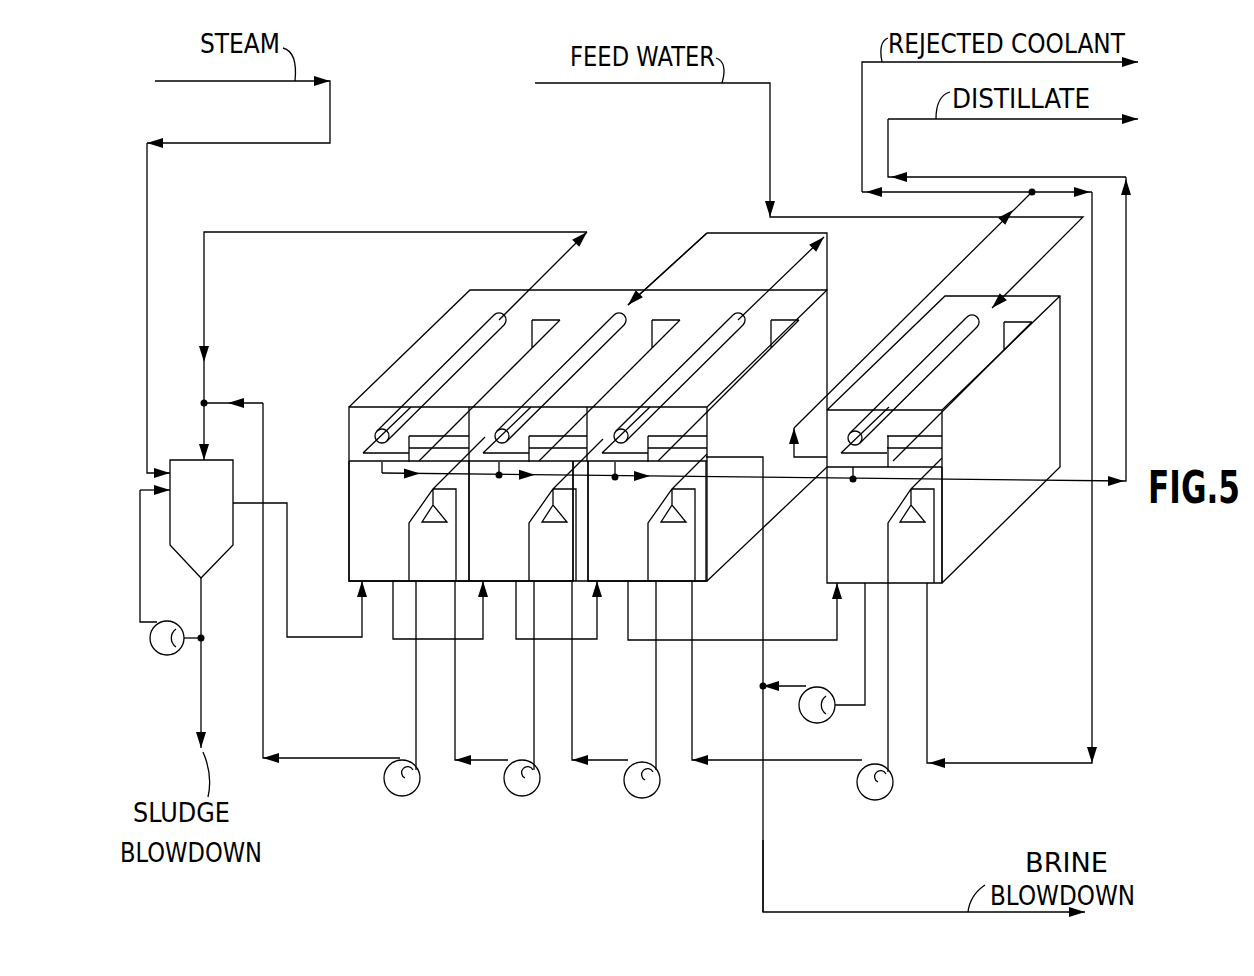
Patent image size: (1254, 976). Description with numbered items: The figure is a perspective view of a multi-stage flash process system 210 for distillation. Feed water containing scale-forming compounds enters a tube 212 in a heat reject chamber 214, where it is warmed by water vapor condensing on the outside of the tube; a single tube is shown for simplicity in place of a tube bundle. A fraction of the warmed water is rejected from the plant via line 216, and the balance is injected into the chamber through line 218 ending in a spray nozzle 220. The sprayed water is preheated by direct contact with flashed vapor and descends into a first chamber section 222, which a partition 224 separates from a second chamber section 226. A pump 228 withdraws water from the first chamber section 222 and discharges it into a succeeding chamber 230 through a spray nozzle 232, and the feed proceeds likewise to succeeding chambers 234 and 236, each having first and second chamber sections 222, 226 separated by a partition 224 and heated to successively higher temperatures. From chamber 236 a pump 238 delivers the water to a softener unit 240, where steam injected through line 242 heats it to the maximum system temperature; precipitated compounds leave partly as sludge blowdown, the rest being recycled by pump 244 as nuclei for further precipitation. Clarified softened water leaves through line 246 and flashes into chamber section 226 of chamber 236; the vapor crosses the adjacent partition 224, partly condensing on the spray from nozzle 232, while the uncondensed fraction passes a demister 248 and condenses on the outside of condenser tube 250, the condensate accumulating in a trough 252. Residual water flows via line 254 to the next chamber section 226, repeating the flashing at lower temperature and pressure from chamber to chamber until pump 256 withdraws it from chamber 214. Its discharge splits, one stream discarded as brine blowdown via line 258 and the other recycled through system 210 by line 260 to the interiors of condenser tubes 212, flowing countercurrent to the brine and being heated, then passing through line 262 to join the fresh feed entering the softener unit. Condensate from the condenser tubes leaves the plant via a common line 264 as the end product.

The multi-stage flash process system 210 is at (1103, 588).
The tube 212 is at (955, 350).
The heat reject chamber 214 is at (1065, 365).
The line 216 is at (862, 153).
The line 218 is at (1090, 715).
The spray nozzle 220 is at (903, 512).
The first chamber section 222 is at (915, 557).
The partition 224 is at (409, 553).
The second chamber section 226 is at (838, 560).
The pump 228 is at (890, 796).
The succeeding chamber 230 is at (818, 283).
The spray nozzle 232 is at (425, 512).
The succeeding chamber 234 is at (620, 288).
The succeeding chamber 236 is at (415, 338).
The pump 238 is at (418, 792).
The softener unit 240 is at (175, 512).
The line 242 is at (147, 392).
The pump 244 is at (150, 642).
The line 246 is at (316, 637).
The demister 248 is at (410, 474).
The condenser tube 250 is at (430, 388).
The trough 252 is at (360, 455).
The line 254 is at (398, 640).
The pump 256 is at (818, 723).
The line 258 is at (762, 840).
The line 260 is at (763, 618).
The line 262 is at (510, 232).
The common line 264 is at (998, 478).